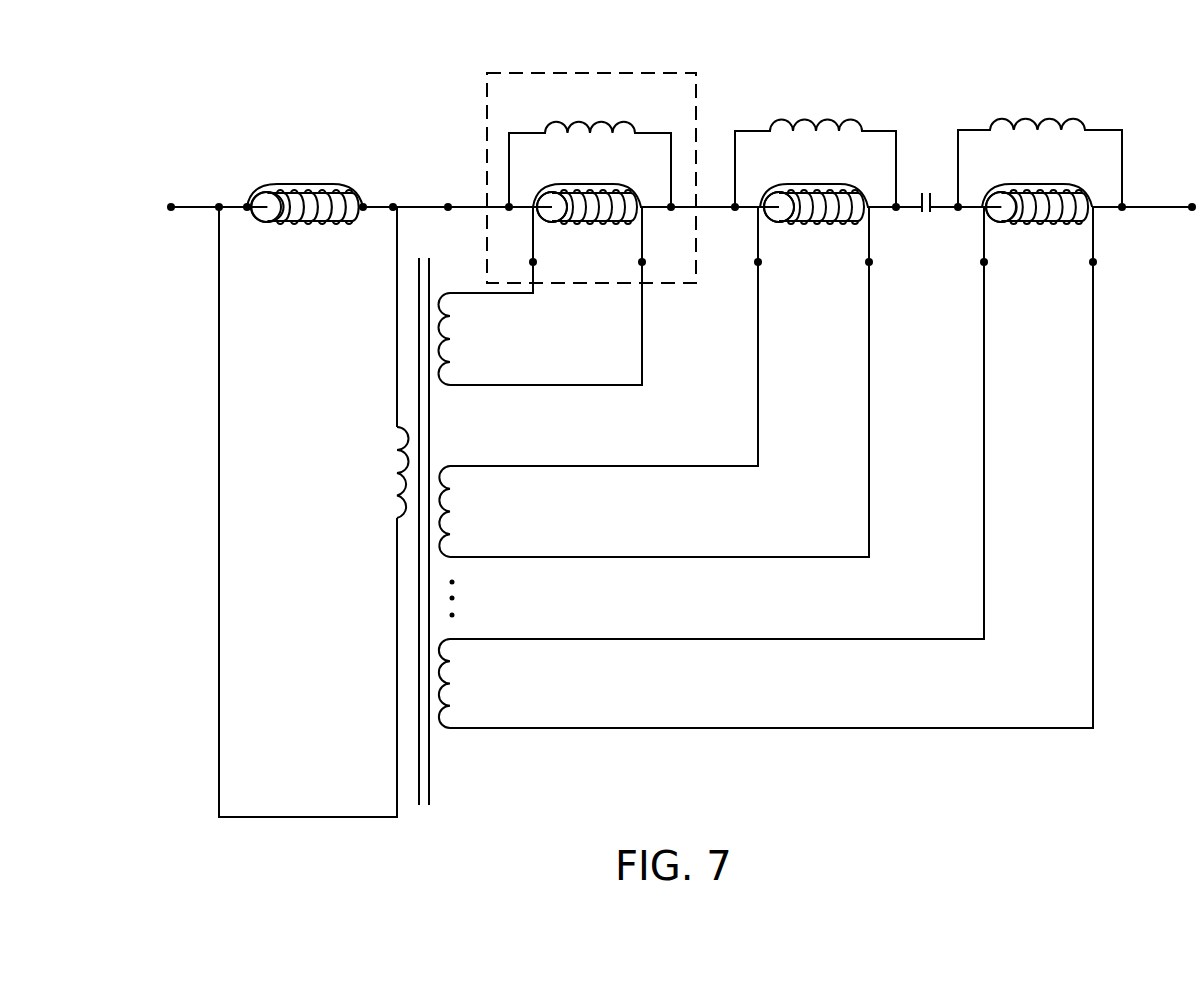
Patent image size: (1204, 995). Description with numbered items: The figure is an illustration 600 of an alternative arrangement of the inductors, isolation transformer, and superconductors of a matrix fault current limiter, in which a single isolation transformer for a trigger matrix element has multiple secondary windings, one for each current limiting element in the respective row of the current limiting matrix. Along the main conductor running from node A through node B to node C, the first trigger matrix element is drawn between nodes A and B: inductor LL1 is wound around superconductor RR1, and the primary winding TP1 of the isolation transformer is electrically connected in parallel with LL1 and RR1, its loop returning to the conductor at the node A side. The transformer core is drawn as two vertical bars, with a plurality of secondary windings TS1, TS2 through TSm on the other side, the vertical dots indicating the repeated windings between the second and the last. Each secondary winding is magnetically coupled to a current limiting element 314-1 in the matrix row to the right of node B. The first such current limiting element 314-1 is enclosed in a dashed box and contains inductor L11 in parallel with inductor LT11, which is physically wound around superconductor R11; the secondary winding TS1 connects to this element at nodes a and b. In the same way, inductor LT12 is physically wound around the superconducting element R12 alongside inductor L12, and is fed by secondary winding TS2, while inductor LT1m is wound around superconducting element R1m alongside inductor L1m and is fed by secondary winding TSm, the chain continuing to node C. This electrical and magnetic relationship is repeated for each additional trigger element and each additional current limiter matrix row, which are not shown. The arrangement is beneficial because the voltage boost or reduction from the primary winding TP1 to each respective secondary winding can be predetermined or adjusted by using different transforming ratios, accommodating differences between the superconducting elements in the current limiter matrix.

The illustration 600 is at (233, 60).
The current limiting element 314-1 is at (522, 73).
The node A is at (170, 190).
The node B is at (447, 190).
The node C is at (1191, 190).
The node a is at (512, 263).
The node b is at (658, 263).
The inductor LL1 is at (305, 185).
The superconductor RR1 is at (258, 212).
The primary winding TP1 is at (376, 472).
The secondary winding TS1 is at (468, 339).
The secondary winding TS2 is at (467, 511).
The secondary winding TSm is at (472, 683).
The inductor L11 is at (590, 149).
The inductor LT11 is at (563, 182).
The superconductor R11 is at (550, 213).
The inductor L12 is at (815, 147).
The inductor LT12 is at (790, 182).
The superconducting element R12 is at (777, 213).
The inductor L1m is at (1040, 147).
The inductor LT1m is at (1015, 182).
The superconducting element R1m is at (1000, 213).